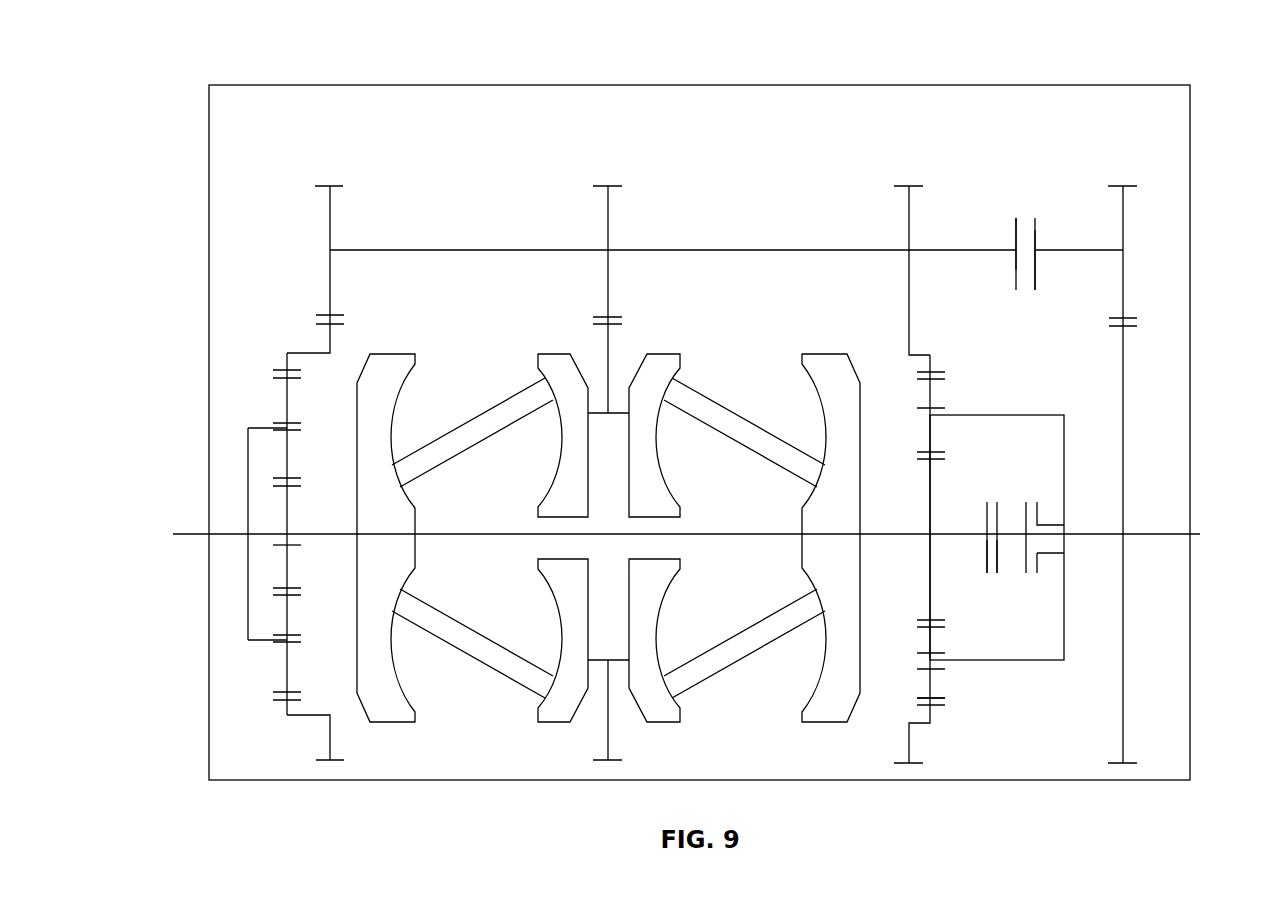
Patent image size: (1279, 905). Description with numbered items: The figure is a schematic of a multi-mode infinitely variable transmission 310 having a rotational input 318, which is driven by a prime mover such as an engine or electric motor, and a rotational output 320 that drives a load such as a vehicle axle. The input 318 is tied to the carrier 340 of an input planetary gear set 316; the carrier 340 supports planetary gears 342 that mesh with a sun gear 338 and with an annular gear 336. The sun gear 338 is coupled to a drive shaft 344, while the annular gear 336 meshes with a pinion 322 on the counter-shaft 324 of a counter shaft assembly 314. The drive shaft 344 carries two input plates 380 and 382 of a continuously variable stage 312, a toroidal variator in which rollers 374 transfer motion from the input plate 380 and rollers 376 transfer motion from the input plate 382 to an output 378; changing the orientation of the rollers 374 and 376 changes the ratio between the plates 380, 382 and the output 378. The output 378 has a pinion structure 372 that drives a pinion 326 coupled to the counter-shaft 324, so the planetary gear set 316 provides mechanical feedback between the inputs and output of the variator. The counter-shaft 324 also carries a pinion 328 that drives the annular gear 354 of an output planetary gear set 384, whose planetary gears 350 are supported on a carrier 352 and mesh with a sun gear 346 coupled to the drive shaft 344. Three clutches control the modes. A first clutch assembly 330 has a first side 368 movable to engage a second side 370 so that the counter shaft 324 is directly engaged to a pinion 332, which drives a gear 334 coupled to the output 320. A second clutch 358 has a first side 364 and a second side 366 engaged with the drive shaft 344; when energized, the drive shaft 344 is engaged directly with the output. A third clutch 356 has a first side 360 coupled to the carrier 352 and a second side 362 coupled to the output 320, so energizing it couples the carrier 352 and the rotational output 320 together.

The multi-mode infinitely variable transmission 310 is at (862, 85).
The continuously variable stage 312 is at (476, 757).
The counter shaft assembly 314 is at (785, 232).
The input planetary gear set 316 is at (250, 677).
The rotational input 318 is at (193, 533).
The rotational output 320 is at (1197, 533).
The pinion 322 is at (326, 213).
The counter-shaft 324 is at (462, 250).
The pinion 326 is at (608, 230).
The pinion 328 is at (909, 272).
The first clutch assembly 330 is at (1029, 204).
The pinion 332 is at (1135, 223).
The gear 334 is at (1124, 385).
The annular gear 336 is at (330, 340).
The sun gear 338 is at (287, 545).
The carrier 340 is at (248, 618).
The planetary gears 342 is at (288, 395).
The drive shaft 344 is at (318, 540).
The sun gear 346 is at (930, 596).
The planetary gears 350 is at (930, 396).
The carrier 352 is at (1025, 415).
The annular gear 354 is at (909, 737).
The third clutch 356 is at (1027, 501).
The second clutch 358 is at (987, 501).
The first side 360 is at (1040, 510).
The second side 362 is at (1024, 510).
The first side 364 is at (998, 570).
The second side 366 is at (987, 552).
The first side 368 is at (1037, 272).
The second side 370 is at (1015, 234).
The pinion structure 372 is at (608, 352).
The rollers 374 is at (738, 413).
The rollers 376 is at (465, 413).
The output 378 is at (622, 453).
The input plate 380 is at (822, 354).
The input plate 382 is at (395, 354).
The output planetary gear set 384 is at (1030, 694).